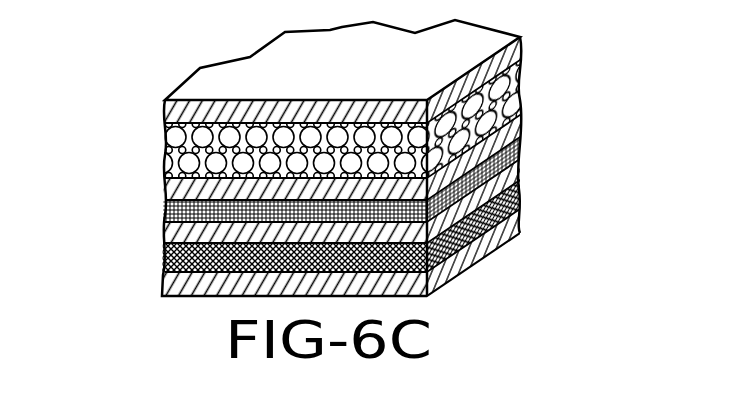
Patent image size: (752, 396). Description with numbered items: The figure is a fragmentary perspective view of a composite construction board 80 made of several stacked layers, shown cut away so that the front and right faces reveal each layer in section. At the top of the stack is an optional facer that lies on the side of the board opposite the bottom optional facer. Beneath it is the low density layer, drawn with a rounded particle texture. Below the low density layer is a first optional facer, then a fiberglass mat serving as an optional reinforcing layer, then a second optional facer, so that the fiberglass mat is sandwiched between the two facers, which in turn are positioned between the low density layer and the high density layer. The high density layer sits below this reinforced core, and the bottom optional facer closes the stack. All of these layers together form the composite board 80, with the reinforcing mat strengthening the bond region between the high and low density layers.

The composite board 80 is at (158, 64).